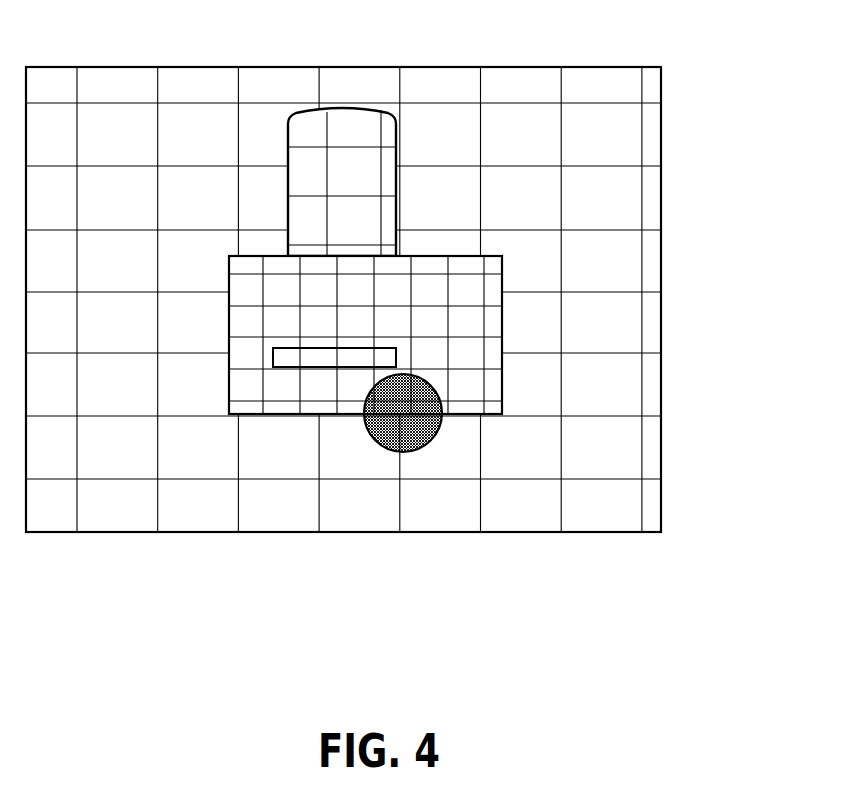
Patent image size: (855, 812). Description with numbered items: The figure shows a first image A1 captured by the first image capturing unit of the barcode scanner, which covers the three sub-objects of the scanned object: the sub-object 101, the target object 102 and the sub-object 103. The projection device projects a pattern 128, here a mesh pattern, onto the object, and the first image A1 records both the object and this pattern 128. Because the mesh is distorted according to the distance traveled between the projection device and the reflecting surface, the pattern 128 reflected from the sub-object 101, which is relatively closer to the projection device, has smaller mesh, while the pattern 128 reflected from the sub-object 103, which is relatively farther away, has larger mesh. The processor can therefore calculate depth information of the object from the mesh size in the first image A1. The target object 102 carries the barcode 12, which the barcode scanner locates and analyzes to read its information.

The first image A1 is at (592, 67).
The pattern 128 is at (606, 165).
The sub-object 103 is at (288, 130).
The target object 102 is at (503, 323).
The barcode 12 is at (283, 367).
The sub-object 101 is at (440, 430).